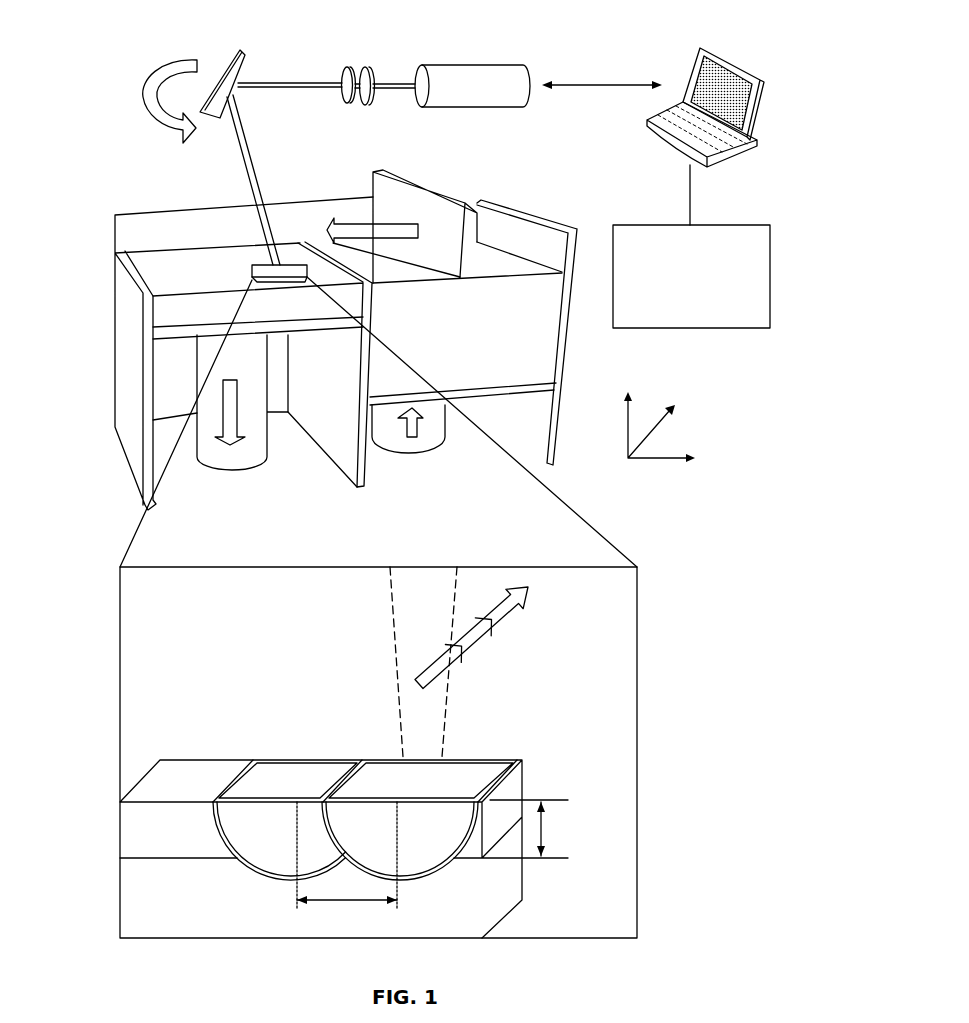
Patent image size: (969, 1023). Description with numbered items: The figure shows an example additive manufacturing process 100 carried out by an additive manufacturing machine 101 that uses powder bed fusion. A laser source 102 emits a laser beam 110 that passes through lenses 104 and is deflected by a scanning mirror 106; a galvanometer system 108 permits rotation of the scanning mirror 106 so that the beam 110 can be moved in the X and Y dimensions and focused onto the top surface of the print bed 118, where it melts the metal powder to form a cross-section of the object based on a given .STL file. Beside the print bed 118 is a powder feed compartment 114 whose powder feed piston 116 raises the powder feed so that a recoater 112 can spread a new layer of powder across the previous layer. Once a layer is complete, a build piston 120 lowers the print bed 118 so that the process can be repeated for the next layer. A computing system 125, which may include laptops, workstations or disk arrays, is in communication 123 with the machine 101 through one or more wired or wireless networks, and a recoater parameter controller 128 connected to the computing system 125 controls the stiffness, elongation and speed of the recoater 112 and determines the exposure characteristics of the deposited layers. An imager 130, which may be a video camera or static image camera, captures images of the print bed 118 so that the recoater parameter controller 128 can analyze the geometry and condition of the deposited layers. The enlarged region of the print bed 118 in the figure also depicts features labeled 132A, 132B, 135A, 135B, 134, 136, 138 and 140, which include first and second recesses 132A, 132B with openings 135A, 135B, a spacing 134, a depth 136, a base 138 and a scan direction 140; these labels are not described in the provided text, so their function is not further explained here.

The additive manufacturing system 100 is at (135, 31).
The additive manufacturing machine 101 is at (117, 70).
The laser source 102 is at (467, 65).
The lenses 104 is at (367, 102).
The scanning mirror 106 is at (245, 55).
The galvanometer system 108 is at (153, 113).
The laser beam 110 is at (257, 173).
The recoater 112 is at (357, 222).
The powder feed compartment 114 is at (465, 338).
The powder feed piston 116 is at (412, 442).
The print bed 118 is at (188, 285).
The build piston 120 is at (237, 445).
The communication 123 is at (612, 88).
The computing system 125 is at (698, 57).
The recoater parameter controller 128 is at (691, 276).
The imager 130 is at (652, 670).
The first calibration recess 132A is at (287, 757).
The second calibration recess 132B is at (485, 757).
The recess spacing 134 is at (337, 903).
The first recess opening 135A is at (305, 795).
The second recess opening 135B is at (400, 793).
The recess depth 136 is at (543, 837).
The base of build platform 138 is at (160, 918).
The scan direction 140 is at (483, 635).